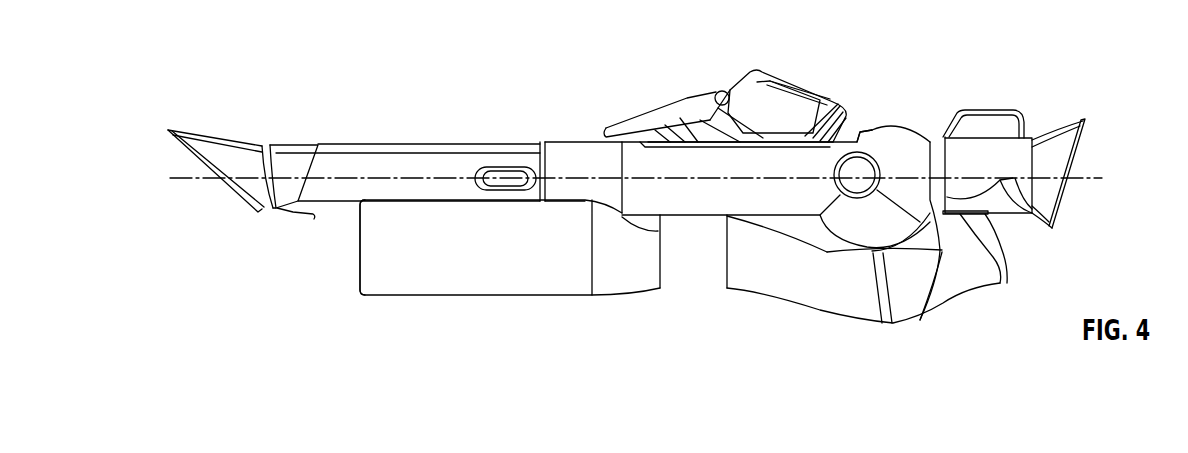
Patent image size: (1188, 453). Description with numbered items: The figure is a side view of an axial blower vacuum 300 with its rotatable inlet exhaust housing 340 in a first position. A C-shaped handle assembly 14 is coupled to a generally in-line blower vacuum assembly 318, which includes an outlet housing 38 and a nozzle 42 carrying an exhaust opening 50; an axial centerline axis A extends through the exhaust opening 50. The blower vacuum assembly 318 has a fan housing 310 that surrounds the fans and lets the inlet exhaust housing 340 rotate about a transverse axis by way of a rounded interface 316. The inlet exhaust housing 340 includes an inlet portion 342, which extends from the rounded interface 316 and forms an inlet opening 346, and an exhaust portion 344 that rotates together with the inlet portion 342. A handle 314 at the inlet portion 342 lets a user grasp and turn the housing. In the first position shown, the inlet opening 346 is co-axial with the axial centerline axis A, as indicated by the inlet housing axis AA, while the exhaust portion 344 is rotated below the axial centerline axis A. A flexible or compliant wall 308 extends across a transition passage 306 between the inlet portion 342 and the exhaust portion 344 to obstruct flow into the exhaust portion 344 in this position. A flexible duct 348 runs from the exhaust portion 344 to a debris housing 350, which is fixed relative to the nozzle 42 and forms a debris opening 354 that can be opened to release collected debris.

The handle assembly 14 is at (823, 77).
The outlet housing 38 is at (717, 162).
The nozzle 42 is at (395, 150).
The exhaust opening 50 is at (232, 203).
The axial blower vacuum 300 is at (530, 97).
The transition passage 306 is at (977, 220).
The wall 308 is at (950, 278).
The fan housing 310 is at (868, 127).
The handle 314 is at (985, 110).
The rounded interface 316 is at (828, 236).
The blower vacuum assembly 318 is at (885, 100).
The inlet exhaust housing 340 is at (903, 150).
The inlet portion 342 is at (1005, 204).
The exhaust portion 344 is at (951, 278).
The inlet opening 346 is at (1080, 191).
The duct 348 is at (788, 288).
The debris housing 350 is at (485, 265).
The debris opening 354 is at (352, 262).
The axial centerline axis A is at (287, 177).
The inlet housing axis AA is at (1018, 198).